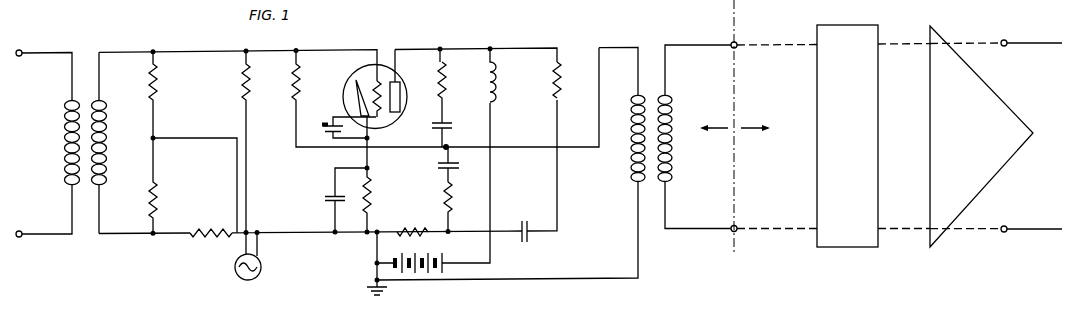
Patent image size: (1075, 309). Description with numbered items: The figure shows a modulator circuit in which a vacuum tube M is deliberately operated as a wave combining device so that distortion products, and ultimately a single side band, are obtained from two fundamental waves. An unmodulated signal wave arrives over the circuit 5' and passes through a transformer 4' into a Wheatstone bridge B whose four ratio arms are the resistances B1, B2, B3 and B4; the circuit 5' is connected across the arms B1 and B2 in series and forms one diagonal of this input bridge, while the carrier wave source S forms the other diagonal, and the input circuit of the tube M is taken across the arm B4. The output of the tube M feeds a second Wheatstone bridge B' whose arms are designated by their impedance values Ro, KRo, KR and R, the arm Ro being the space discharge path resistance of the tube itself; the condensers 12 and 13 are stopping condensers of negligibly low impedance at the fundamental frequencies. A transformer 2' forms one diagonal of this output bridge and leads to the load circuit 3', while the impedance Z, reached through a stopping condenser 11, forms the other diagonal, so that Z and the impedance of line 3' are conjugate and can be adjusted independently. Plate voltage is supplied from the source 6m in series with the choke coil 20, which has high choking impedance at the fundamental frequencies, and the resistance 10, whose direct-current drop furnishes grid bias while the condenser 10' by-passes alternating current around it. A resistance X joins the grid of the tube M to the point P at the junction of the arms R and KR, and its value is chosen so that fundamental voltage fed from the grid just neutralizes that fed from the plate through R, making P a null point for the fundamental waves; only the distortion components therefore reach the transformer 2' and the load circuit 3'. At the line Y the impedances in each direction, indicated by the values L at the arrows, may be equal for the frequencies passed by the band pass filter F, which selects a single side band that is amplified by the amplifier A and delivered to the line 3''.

The circuit 5' is at (44, 143).
The transformer 4' is at (86, 131).
The Wheatstone bridge B is at (194, 131).
The resistance B1 is at (148, 92).
The resistance B2 is at (147, 197).
The resistance B3 is at (211, 220).
The resistance B4 is at (235, 88).
The resistance X is at (290, 90).
The carrier wave source S is at (262, 264).
The vacuum tube M is at (366, 89).
The space discharge path resistance Ro is at (385, 119).
The resistance 10 is at (382, 189).
The condenser 10' is at (325, 200).
The bridge arm impedance KRo is at (412, 220).
The plate voltage supply source 6m is at (432, 255).
The Wheatstone bridge B' is at (427, 102).
The resistance R is at (447, 83).
The stopping condenser 12 is at (450, 125).
The point P is at (452, 145).
The stopping condenser 13 is at (459, 166).
The resistance KR is at (455, 194).
The choke coil 20 is at (500, 82).
The impedance Z is at (561, 87).
The stopping condenser 11 is at (528, 243).
The transformer 2' is at (681, 126).
The load circuit 3' is at (774, 149).
The line Y— Y is at (735, 135).
The impedance value L is at (735, 118).
The band pass filter F is at (850, 247).
The amplifier A is at (940, 230).
The line 3'' is at (1031, 144).